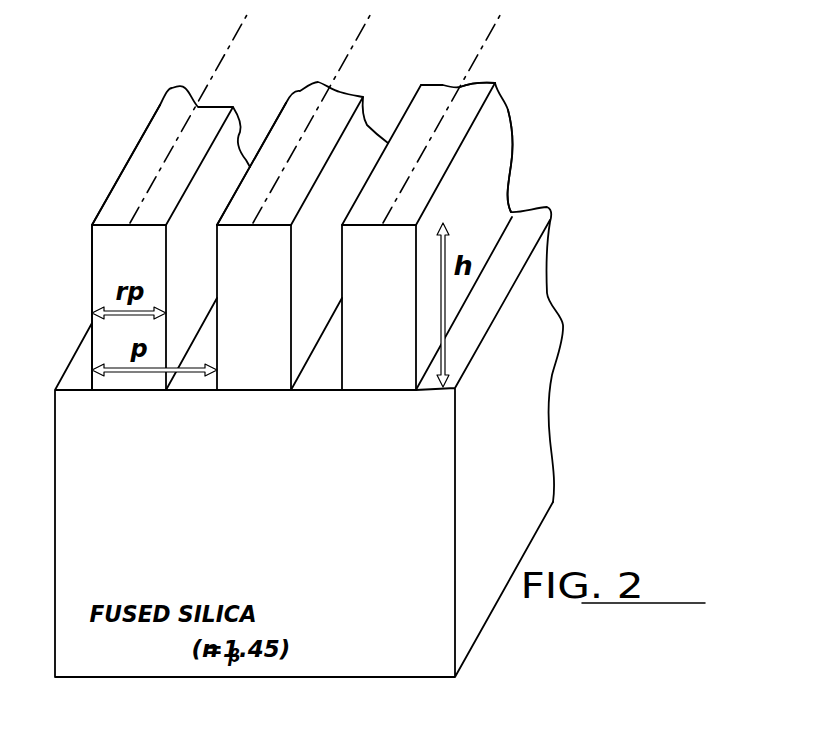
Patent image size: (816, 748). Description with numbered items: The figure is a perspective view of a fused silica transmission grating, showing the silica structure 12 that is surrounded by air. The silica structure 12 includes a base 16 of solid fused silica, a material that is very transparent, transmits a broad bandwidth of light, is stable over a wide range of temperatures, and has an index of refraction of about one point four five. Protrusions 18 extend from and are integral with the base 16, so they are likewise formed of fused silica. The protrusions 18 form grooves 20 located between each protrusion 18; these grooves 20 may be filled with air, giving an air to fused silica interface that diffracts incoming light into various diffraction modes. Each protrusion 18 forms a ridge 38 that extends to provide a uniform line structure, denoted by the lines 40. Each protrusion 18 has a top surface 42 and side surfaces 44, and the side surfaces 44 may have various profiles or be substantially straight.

The silica structure 12 is at (580, 304).
The base 16 is at (527, 422).
The protrusions 18 is at (166, 108).
The grooves 20 is at (203, 392).
The ridge 38 is at (237, 187).
The lines 40 is at (345, 62).
The top surface 42 is at (471, 109).
The side surfaces 44 is at (485, 178).